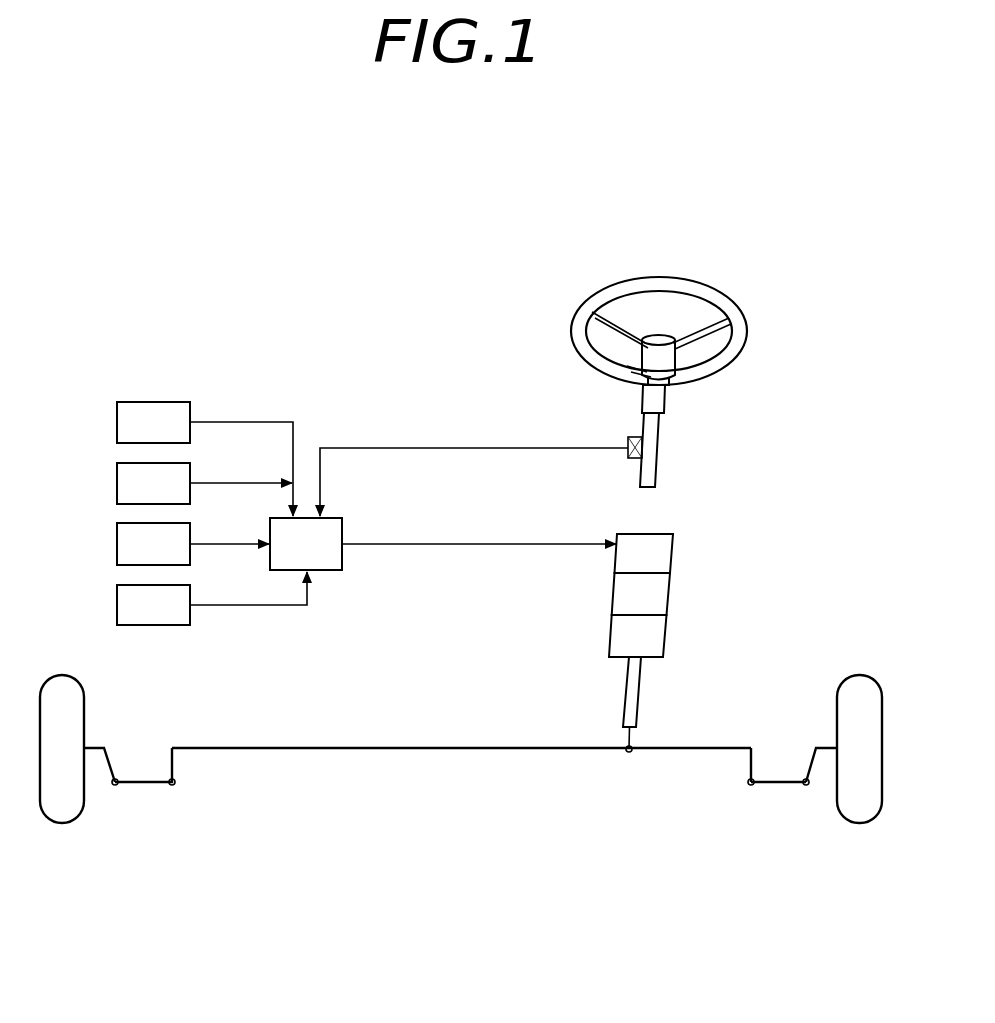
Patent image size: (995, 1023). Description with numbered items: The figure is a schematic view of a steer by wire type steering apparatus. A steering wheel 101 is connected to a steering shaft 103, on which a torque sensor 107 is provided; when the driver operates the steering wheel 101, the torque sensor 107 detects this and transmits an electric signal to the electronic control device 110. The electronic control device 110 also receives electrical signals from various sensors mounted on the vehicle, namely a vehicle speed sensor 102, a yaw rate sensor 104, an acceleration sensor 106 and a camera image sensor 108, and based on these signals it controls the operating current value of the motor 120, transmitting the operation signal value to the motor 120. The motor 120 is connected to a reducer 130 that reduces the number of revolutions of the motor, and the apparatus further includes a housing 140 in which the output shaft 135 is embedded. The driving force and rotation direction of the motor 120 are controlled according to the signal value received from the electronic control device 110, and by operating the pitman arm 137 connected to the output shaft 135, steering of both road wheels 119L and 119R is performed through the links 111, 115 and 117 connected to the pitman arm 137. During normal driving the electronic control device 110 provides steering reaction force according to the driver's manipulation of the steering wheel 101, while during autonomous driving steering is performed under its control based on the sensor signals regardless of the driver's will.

The steering wheel 101 is at (655, 283).
The vehicle speed sensor 102 is at (117, 419).
The steering shaft 103 is at (650, 450).
The yaw rate sensor 104 is at (117, 480).
The acceleration sensor 106 is at (117, 541).
The torque sensor 107 is at (629, 440).
The camera image sensor 108 is at (117, 602).
The electronic control device 110 is at (323, 571).
The link 111 is at (435, 750).
The link 115 is at (130, 787).
The link 117 is at (113, 763).
The road wheel 119L is at (62, 813).
The road wheel 119R is at (852, 813).
The motor 120 is at (662, 556).
The reducer 130 is at (662, 593).
The output shaft 135 is at (633, 692).
The pitman arm 137 is at (633, 737).
The housing 140 is at (658, 637).